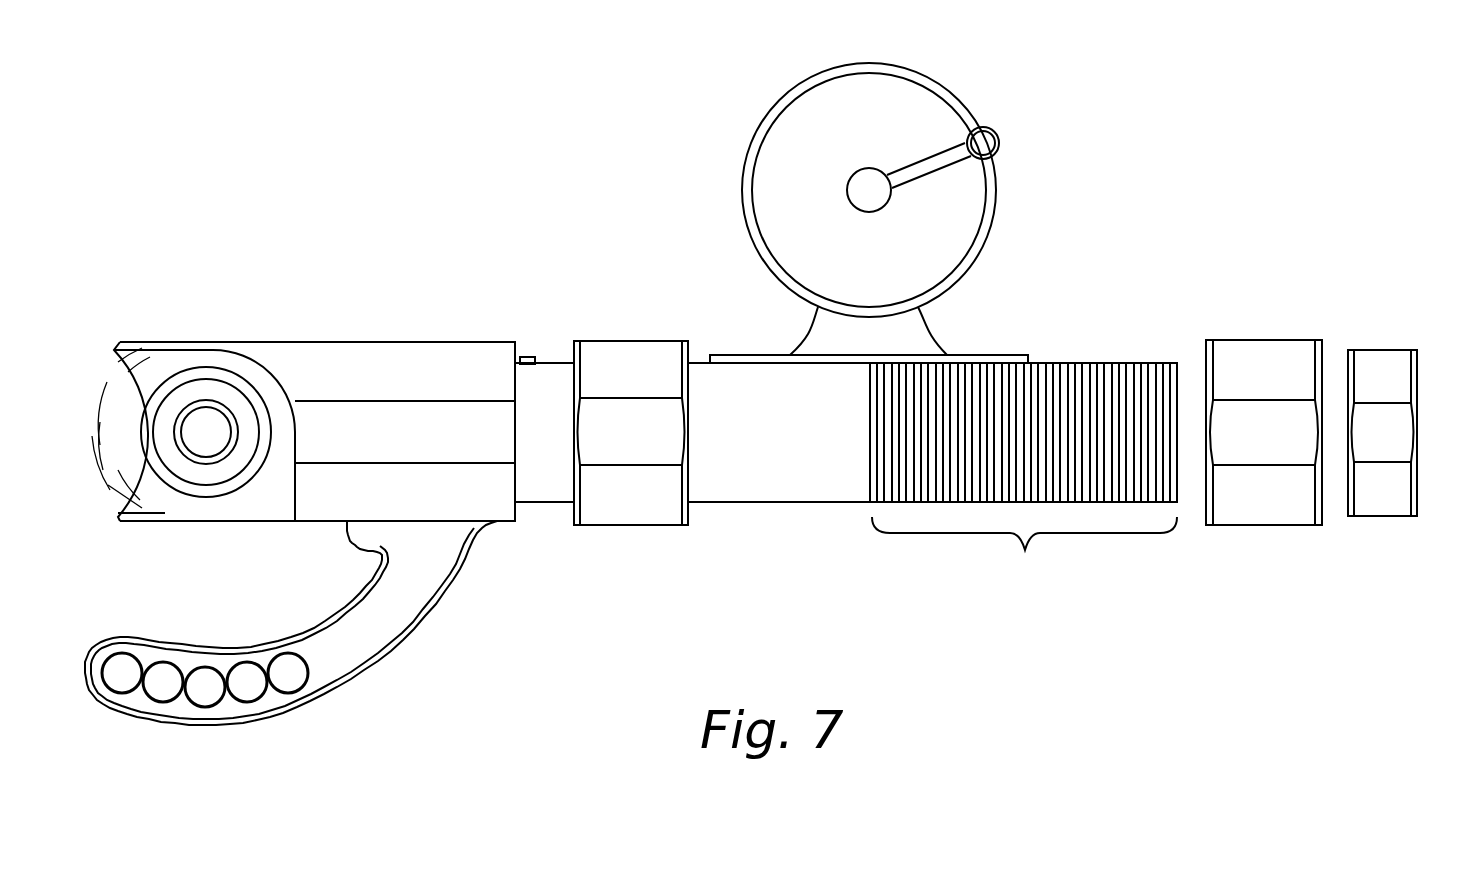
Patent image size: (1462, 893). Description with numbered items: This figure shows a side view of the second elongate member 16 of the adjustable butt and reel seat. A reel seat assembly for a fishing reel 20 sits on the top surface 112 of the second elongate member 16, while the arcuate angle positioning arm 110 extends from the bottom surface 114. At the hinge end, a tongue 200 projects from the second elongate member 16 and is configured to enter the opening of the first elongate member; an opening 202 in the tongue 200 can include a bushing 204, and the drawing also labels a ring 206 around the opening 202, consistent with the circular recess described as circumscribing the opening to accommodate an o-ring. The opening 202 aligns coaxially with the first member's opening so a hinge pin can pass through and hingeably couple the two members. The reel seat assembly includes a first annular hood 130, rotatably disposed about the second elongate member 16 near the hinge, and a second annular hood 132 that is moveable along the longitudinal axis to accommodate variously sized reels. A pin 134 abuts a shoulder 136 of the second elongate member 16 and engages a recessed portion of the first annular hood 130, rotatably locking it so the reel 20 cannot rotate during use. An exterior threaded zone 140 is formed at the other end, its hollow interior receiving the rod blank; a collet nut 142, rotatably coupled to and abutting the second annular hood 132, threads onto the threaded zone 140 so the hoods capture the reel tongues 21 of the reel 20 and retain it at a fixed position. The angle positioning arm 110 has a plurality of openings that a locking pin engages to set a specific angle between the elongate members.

The second elongate member 16 is at (492, 257).
The reel 20 is at (957, 81).
The reel tongue 21 is at (742, 355).
The angle positioning arm 110 is at (288, 722).
The top surface 112 is at (1090, 363).
The bottom surface 114 is at (207, 523).
The first annular hood 130 is at (637, 528).
The second annular hood 132 is at (1266, 336).
The pin 134 is at (540, 355).
The shoulder 136 is at (517, 508).
The exterior threaded zone 140 is at (1024, 551).
The nut 142 is at (1380, 346).
The tongue 200 is at (178, 337).
The opening 202 is at (202, 428).
The bushing 204 is at (222, 402).
The outer ring 206 is at (255, 408).